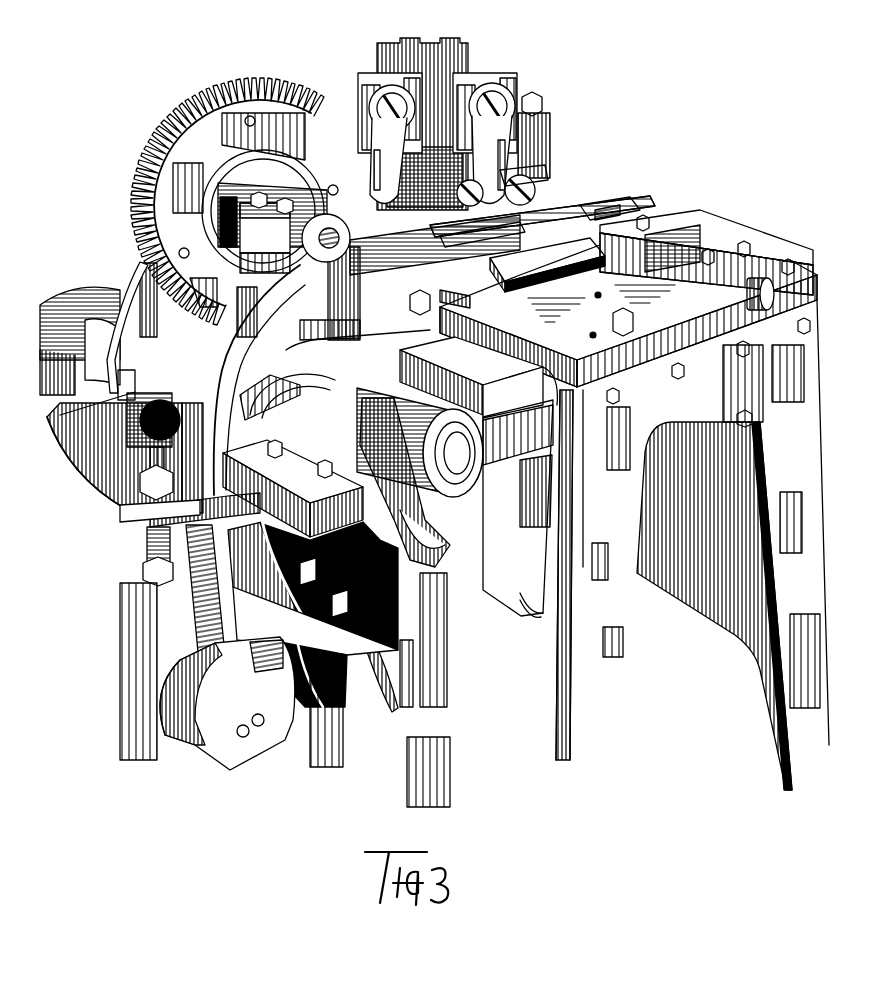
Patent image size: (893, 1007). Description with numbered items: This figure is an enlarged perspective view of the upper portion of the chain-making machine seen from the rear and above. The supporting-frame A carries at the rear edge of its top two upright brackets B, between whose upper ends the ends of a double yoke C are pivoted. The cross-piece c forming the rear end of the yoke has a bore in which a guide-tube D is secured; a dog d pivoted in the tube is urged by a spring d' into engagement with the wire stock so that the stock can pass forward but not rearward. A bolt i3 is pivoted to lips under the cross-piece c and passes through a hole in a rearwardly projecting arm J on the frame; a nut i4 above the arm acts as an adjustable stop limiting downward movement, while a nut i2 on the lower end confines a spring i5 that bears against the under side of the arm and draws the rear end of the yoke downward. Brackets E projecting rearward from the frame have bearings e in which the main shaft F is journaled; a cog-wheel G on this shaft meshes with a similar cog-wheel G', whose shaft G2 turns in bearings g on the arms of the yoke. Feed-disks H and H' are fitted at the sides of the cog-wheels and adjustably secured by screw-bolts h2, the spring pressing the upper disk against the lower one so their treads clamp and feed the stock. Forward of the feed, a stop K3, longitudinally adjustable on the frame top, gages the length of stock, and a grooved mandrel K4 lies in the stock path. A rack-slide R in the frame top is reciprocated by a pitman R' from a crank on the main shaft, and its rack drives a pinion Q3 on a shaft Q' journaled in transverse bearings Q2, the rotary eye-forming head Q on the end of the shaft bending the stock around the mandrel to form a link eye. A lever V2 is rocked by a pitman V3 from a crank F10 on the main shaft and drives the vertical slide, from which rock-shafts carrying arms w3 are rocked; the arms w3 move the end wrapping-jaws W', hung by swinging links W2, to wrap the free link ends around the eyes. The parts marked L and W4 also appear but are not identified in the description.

The supporting-frame A is at (614, 526).
The upright brackets B is at (445, 300).
The double yoke C is at (247, 382).
The cross-piece c is at (149, 408).
The guide-tube D is at (72, 466).
The dog d is at (127, 327).
The spring d' is at (193, 271).
The bearings e is at (88, 310).
The brackets E is at (262, 462).
The main shaft F is at (425, 548).
The crank F10 is at (94, 335).
The cog-wheel G is at (274, 585).
The cog-wheel G' is at (227, 195).
The shaft G2 is at (222, 212).
The bearings g is at (312, 225).
The feed-disk H is at (322, 380).
The feed-disk H' is at (250, 226).
The screw-bolts h2 is at (256, 121).
The nut i2 is at (143, 572).
The bolt i3 is at (147, 548).
The nut i4 is at (152, 478).
The spring i5 is at (140, 478).
The arm J is at (135, 525).
The stop K3 is at (610, 207).
The mandrel K4 is at (585, 205).
The plate L is at (545, 285).
The rotary eye-forming head Q is at (706, 241).
The shaft Q' is at (773, 294).
The transverse bearings Q2 is at (650, 240).
The pinion Q3 is at (682, 245).
The rack-slide R is at (471, 377).
The pitman R' is at (520, 492).
The lever V2 is at (185, 672).
The pitman V3 is at (155, 585).
The end wrapping-jaws W' is at (532, 182).
The swinging links W2 is at (375, 122).
The arms w3 is at (548, 153).
The housing plate W4 is at (380, 73).